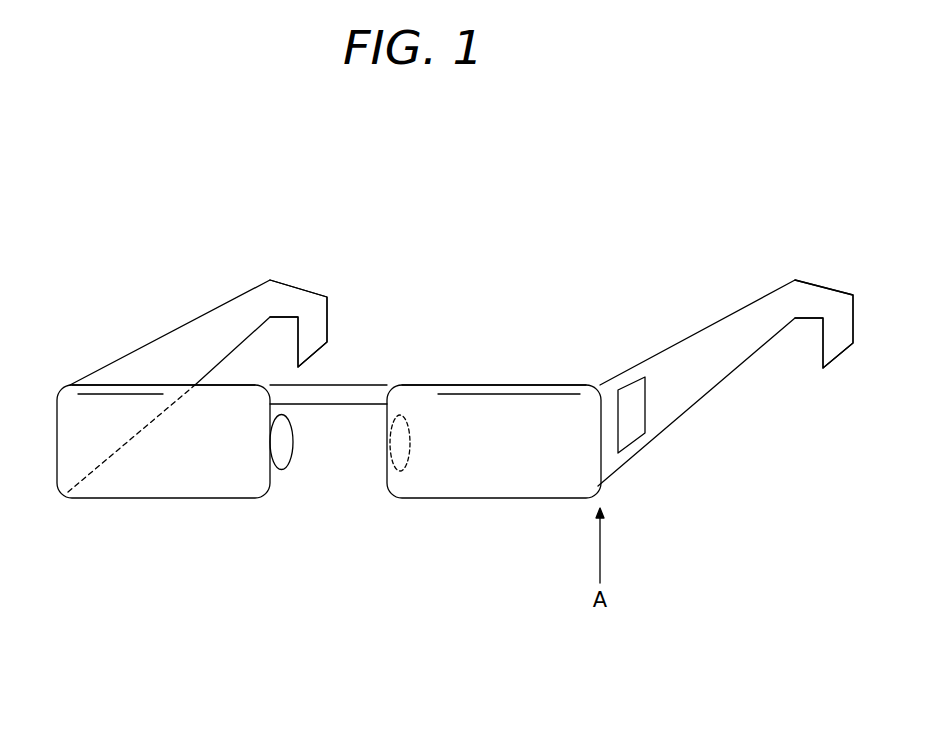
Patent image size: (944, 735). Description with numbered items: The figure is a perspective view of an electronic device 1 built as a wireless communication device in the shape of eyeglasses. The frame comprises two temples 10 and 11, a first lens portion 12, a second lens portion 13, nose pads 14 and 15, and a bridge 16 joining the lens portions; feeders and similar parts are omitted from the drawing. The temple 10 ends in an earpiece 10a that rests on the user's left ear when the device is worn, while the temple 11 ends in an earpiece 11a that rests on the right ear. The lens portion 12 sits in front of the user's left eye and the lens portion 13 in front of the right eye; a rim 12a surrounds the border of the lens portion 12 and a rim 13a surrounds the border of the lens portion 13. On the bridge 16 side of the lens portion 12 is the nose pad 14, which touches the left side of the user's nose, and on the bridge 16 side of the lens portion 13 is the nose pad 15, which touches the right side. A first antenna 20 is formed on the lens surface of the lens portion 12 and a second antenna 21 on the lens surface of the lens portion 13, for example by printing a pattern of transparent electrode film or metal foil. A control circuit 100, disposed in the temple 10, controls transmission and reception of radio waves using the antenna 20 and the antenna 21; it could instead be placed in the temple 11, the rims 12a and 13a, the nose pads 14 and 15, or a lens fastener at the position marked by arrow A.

The electronic device 1 is at (455, 352).
The temple 10 is at (715, 320).
The earpiece 10a is at (825, 298).
The temple 11 is at (203, 315).
The earpiece 11a is at (302, 293).
The lens portion 12 is at (503, 453).
The rim 12a is at (470, 383).
The lens portion 13 is at (173, 452).
The rim 13a is at (170, 385).
The nose pad 14 is at (400, 471).
The nose pad 15 is at (280, 467).
The bridge 16 is at (367, 385).
The antenna 20 is at (523, 393).
The antenna 21 is at (125, 393).
The control circuit 100 is at (638, 440).